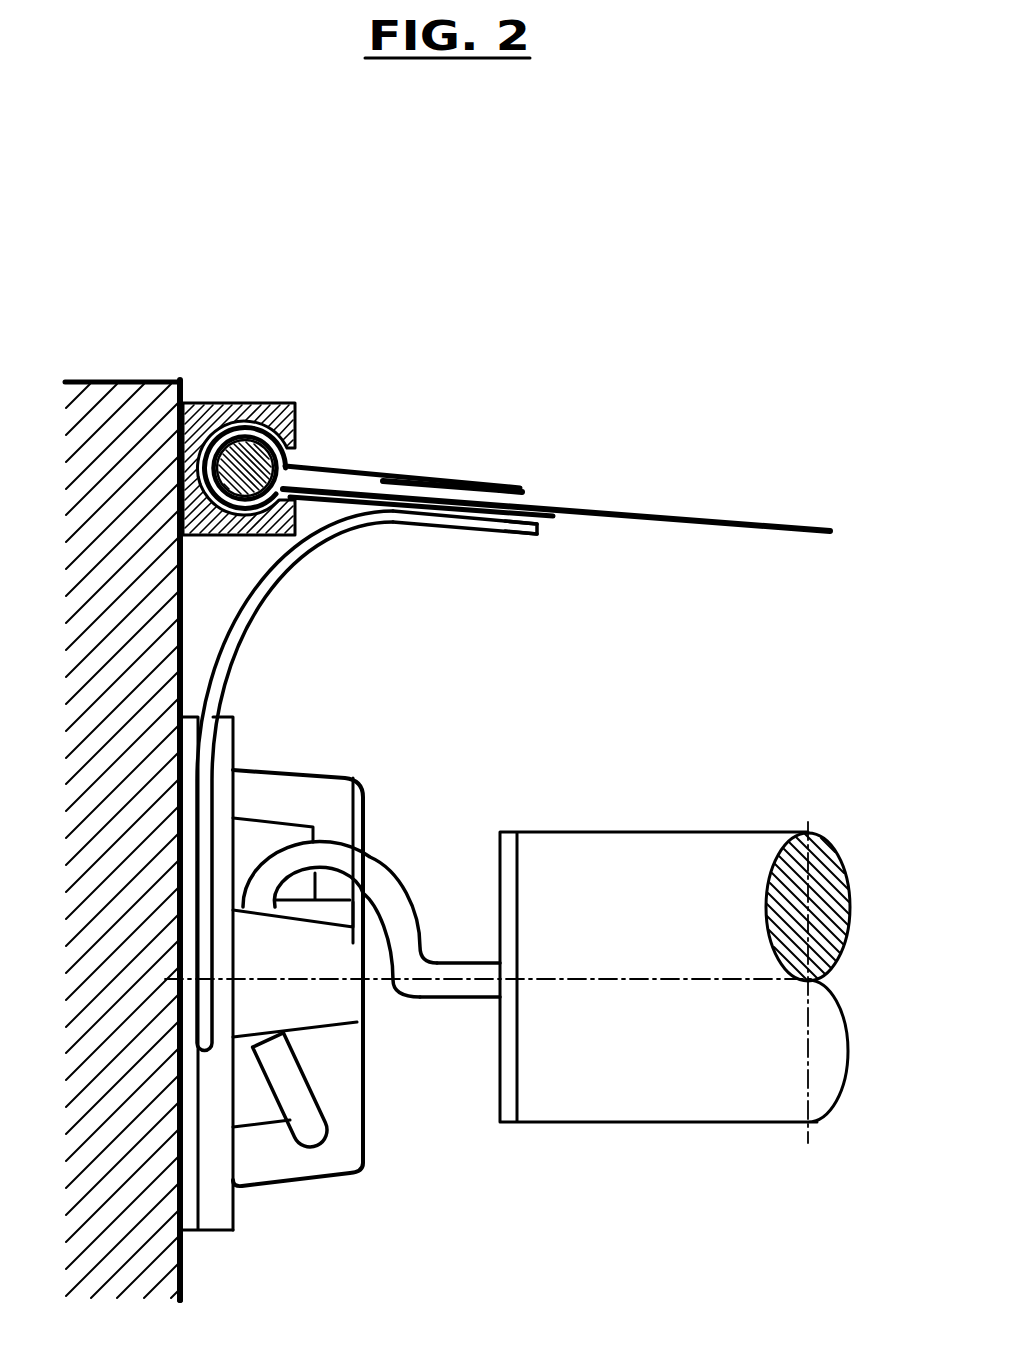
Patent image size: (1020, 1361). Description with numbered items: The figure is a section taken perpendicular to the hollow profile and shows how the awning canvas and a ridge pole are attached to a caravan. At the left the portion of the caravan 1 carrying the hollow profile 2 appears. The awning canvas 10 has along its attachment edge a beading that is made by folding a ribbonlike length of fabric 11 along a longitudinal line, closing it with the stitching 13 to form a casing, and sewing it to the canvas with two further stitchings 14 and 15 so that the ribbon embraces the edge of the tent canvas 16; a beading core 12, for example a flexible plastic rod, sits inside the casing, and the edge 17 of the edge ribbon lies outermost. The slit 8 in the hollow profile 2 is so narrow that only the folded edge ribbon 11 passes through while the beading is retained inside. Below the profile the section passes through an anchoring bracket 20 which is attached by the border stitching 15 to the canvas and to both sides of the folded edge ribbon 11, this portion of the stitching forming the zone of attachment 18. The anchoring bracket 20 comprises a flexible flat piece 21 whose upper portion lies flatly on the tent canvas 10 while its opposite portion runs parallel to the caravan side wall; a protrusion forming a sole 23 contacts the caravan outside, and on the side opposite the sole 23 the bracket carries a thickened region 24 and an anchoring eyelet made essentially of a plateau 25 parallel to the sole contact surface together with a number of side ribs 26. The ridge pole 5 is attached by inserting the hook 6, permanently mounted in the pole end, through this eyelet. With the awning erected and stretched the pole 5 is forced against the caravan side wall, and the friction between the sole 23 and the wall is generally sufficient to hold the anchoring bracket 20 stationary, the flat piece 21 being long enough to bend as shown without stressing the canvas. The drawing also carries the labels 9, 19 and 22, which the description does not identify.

The caravan 1 is at (110, 372).
The hollow profile 2 is at (264, 401).
The ridge pole 5 is at (712, 1107).
The hook 6 is at (448, 970).
The slit 8 is at (301, 460).
The gap 9 is at (196, 1277).
The awning canvas 10 is at (800, 525).
The folded edge ribbon 11 is at (429, 408).
The beading core 12 is at (231, 440).
The stitching 13 is at (321, 467).
The middle stitching 14 is at (467, 528).
The border stitching 15 is at (505, 510).
The edge of the tent canvas 16 is at (393, 483).
The edge of the edge ribbon 17 is at (518, 490).
The zone of attachment 18 is at (505, 545).
The clamp sleeve 19 is at (288, 456).
The anchoring bracket 20 is at (383, 664).
The flat piece 21 is at (267, 562).
The housing 22 is at (321, 944).
The sole 23 is at (190, 727).
The thickened region 24 is at (225, 730).
The plateau 25 is at (410, 1057).
The side ribs 26 is at (303, 790).